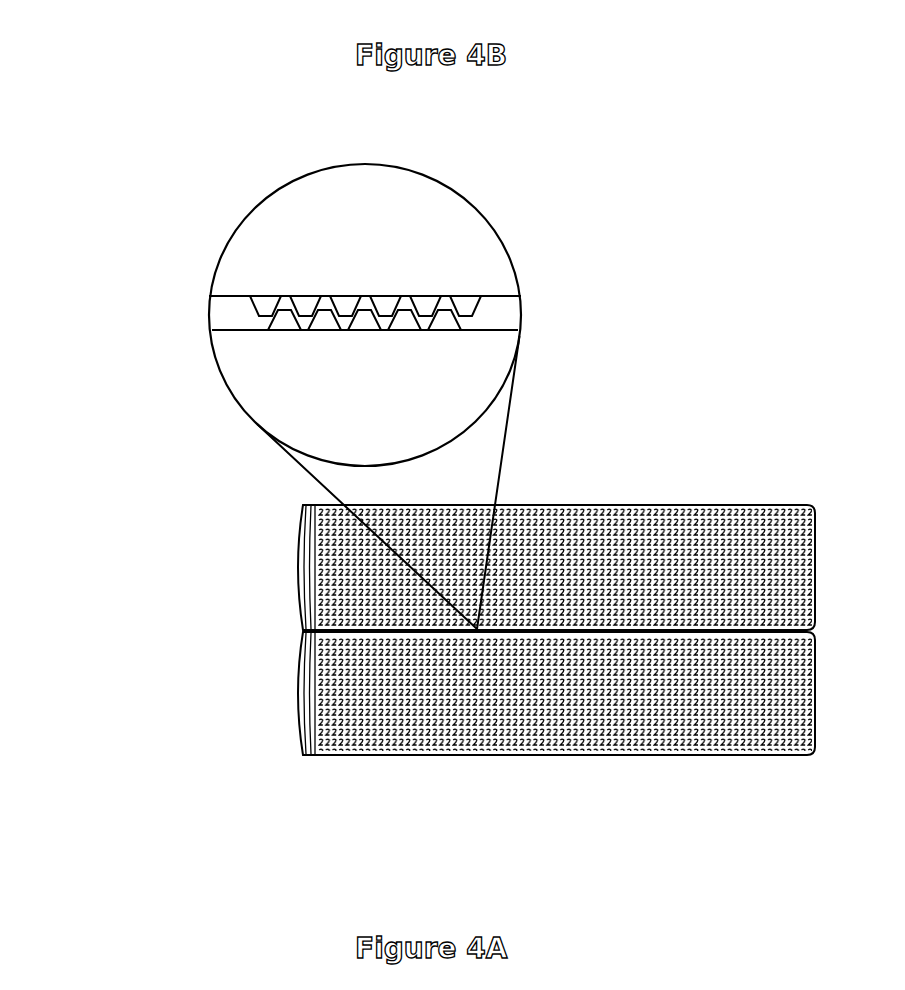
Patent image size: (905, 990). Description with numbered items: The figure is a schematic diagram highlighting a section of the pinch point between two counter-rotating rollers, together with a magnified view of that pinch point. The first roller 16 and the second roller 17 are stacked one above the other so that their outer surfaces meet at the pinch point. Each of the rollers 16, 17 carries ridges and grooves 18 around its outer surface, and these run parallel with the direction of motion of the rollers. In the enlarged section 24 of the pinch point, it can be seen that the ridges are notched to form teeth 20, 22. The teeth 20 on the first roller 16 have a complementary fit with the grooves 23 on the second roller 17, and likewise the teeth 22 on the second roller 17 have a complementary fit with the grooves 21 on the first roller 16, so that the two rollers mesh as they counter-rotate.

In FIG. 4A, the first roller 16 is at (296, 567).
In FIG. 4A, the second roller 17 is at (296, 691).
In FIG. 4A, the ridges and grooves 18 is at (749, 683).
In FIG. 4B, the teeth 20 is at (478, 305).
In FIG. 4B, the grooves 21 is at (443, 294).
In FIG. 4B, the teeth 22 is at (272, 323).
In FIG. 4B, the grooves 23 is at (302, 332).
In FIG. 4B, the enlarged section 24 is at (252, 210).